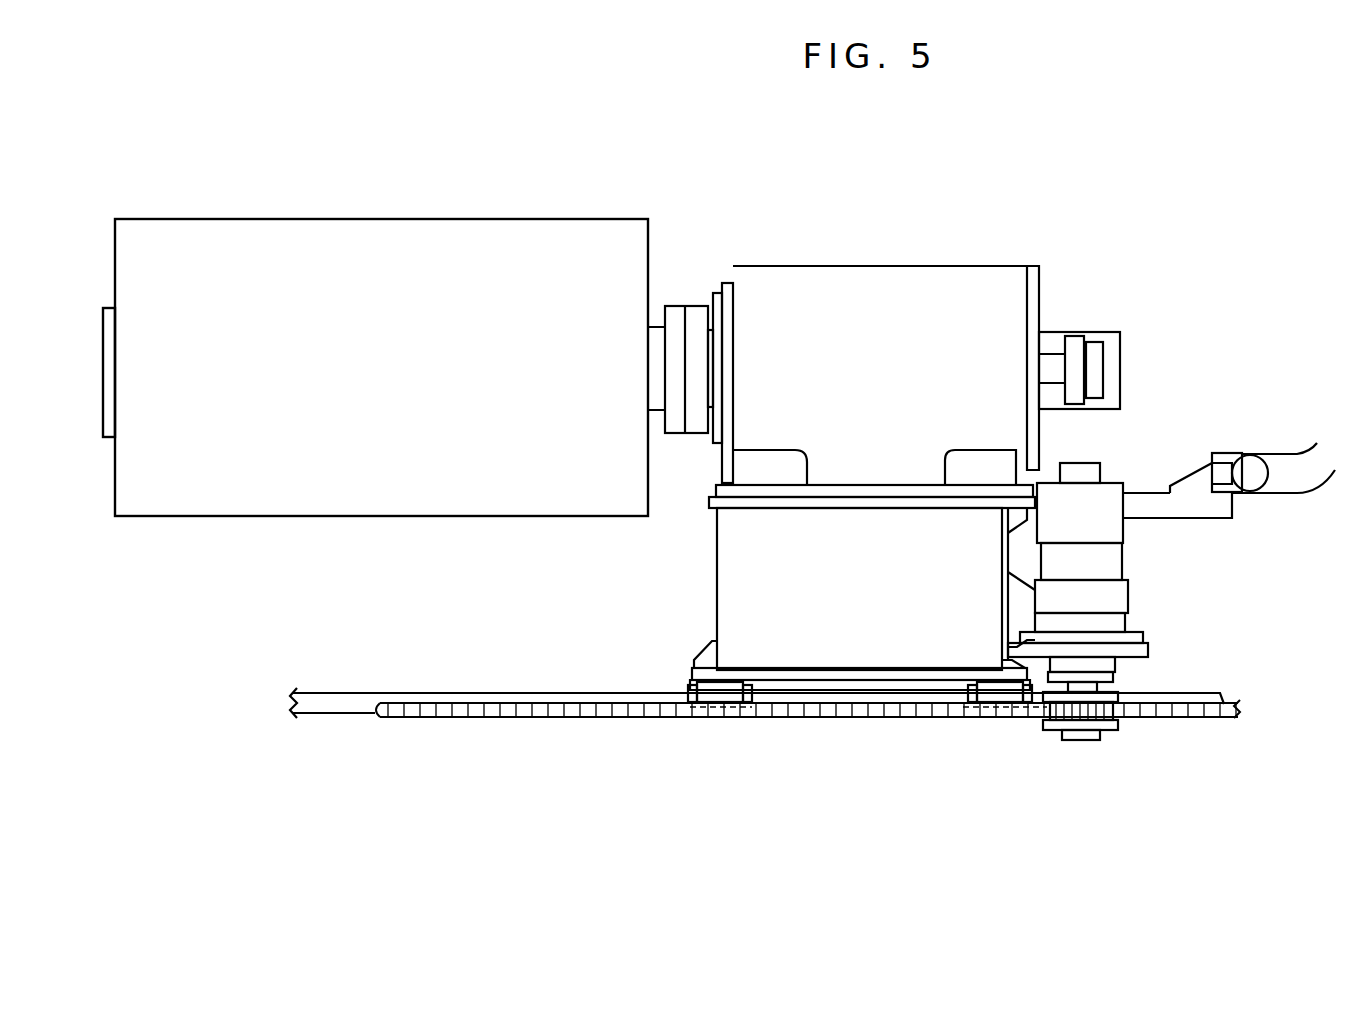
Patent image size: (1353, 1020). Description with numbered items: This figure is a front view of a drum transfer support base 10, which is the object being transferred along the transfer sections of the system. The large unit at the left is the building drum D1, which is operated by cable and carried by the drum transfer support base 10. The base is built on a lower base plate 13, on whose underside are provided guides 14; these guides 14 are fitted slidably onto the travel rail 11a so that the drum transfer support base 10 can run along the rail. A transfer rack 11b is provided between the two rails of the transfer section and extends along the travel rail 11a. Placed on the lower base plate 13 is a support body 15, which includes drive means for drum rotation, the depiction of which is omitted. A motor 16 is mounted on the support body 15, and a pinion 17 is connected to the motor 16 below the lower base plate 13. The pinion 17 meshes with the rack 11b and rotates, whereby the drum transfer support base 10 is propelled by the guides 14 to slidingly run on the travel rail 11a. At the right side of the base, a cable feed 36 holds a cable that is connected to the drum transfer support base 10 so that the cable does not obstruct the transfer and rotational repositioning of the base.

The building drum D1 is at (580, 245).
The drum transfer support base 10 is at (1012, 252).
The travel rail 11a is at (345, 705).
The transfer rack 11b is at (912, 716).
The lower base plate 13 is at (695, 672).
The guide 14 is at (722, 692).
The support body 15 is at (735, 550).
The motor 16 is at (1110, 596).
The pinion 17 is at (1085, 712).
The cable feed 36 is at (1304, 462).